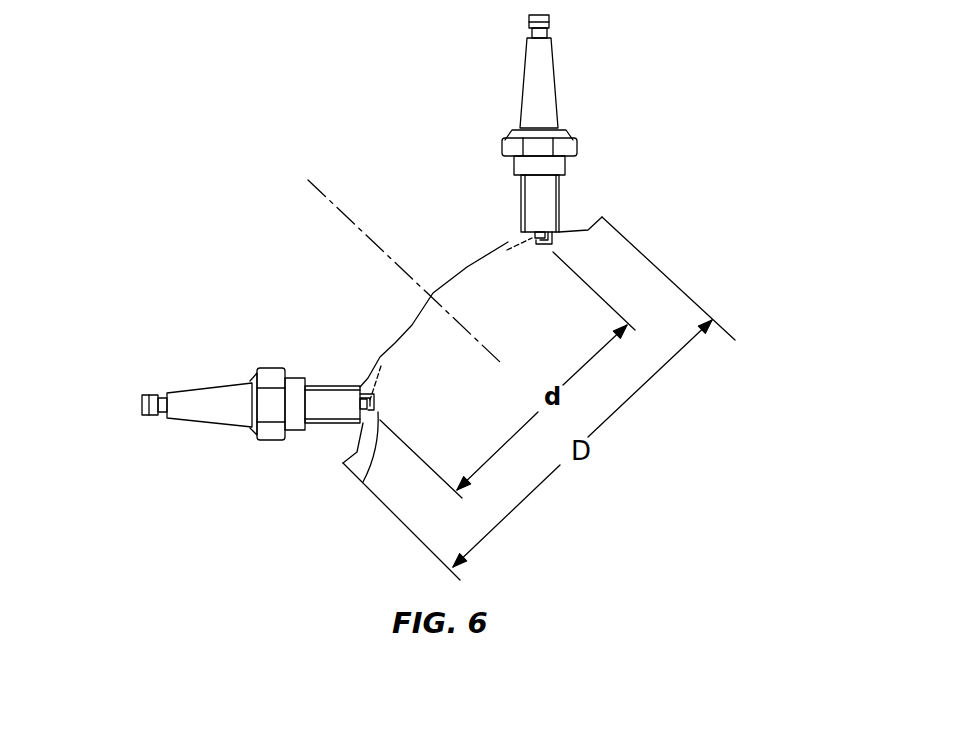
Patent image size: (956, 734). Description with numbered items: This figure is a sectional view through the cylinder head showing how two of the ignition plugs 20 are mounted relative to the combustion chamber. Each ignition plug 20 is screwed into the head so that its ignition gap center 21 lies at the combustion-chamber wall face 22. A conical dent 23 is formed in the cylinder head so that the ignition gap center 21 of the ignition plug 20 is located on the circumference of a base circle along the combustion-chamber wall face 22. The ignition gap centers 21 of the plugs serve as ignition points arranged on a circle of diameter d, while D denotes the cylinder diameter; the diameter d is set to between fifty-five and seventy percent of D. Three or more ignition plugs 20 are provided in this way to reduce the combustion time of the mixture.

The ignition plug 20 is at (557, 202).
The ignition gap center 21 is at (508, 242).
The combustion-chamber wall face 22 is at (410, 327).
The conical dent 23 is at (367, 382).